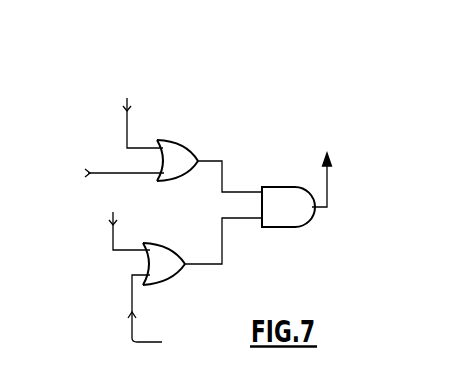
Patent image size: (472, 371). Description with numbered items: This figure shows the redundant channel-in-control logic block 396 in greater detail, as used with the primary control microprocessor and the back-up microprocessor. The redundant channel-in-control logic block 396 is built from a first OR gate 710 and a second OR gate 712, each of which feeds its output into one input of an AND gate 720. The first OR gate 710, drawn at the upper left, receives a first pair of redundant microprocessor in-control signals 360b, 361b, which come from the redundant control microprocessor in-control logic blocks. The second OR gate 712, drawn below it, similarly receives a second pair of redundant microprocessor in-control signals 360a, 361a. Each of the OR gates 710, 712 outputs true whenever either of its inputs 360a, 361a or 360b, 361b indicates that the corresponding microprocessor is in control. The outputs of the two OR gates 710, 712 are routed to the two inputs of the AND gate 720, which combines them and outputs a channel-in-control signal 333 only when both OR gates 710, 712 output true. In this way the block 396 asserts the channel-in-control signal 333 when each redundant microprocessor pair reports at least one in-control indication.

The first OR gate 710 is at (181, 141).
The second OR gate 712 is at (172, 277).
The AND gate 720 is at (278, 187).
The redundant microprocessor in-control signal 360a is at (113, 212).
The redundant microprocessor in-control signal 360b is at (127, 98).
The redundant microprocessor in-control signal 361a is at (167, 316).
The redundant microprocessor in-control signal 361b is at (87, 173).
The channel-in-control signal 333 is at (331, 160).
The redundant channel-in-control logic block 396 is at (323, 93).